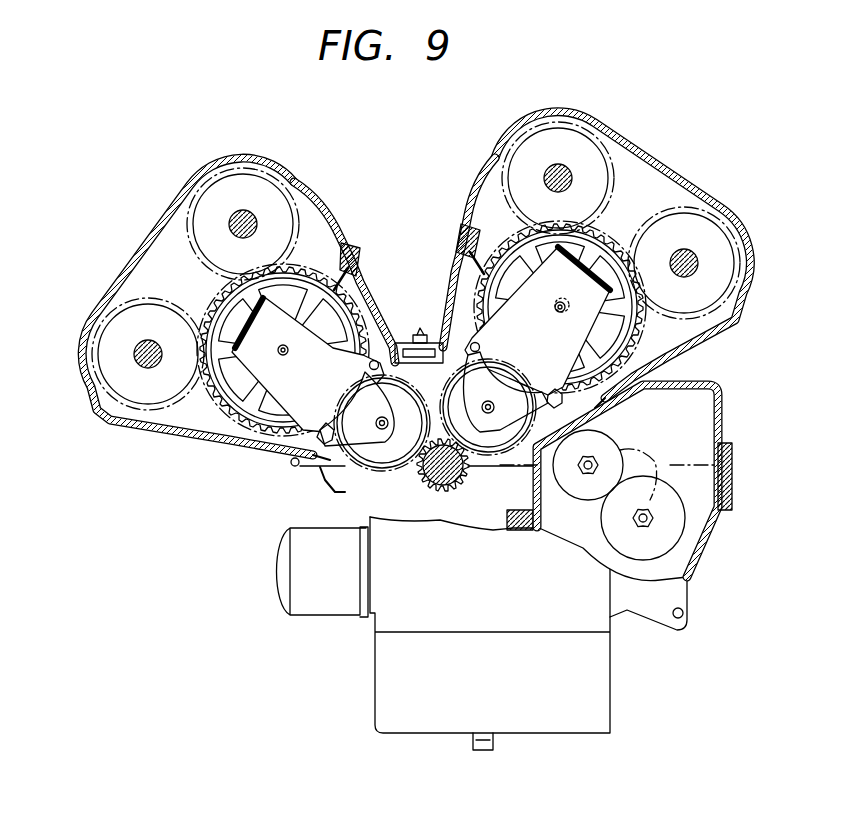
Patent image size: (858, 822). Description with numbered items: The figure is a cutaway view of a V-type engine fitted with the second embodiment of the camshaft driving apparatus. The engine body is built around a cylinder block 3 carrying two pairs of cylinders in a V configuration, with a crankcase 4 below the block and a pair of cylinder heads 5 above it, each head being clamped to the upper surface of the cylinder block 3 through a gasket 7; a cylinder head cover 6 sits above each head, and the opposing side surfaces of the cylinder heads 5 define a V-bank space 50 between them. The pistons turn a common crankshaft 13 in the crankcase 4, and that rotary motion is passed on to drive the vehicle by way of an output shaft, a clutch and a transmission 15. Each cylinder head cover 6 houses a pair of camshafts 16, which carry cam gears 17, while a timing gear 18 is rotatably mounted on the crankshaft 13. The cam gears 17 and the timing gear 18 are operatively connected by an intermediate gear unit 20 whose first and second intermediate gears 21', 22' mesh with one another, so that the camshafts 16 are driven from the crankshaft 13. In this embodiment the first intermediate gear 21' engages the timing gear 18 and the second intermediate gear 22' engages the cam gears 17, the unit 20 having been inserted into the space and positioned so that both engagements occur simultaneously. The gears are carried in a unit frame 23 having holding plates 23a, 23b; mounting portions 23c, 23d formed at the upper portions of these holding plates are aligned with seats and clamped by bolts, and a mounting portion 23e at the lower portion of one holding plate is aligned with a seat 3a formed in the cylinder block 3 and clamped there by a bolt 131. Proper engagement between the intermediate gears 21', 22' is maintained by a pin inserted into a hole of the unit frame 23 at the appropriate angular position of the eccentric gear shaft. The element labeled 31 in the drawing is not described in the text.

The cylinder block 3 is at (448, 302).
The seat 3a is at (287, 443).
The crankcase 4 is at (355, 505).
The cylinder head 5 is at (323, 204).
The cylinder head cover 6 is at (178, 196).
The gasket 7 is at (350, 284).
The crankshaft 13 is at (443, 477).
The transmission 15 is at (655, 462).
The camshaft 16 is at (238, 217).
The cam gear 17 is at (295, 183).
The timing gear 18 is at (420, 473).
The intermediate gear unit 20 is at (213, 300).
The first intermediate gear 21' is at (435, 437).
The second intermediate gear 22' is at (421, 315).
The unit frame 23 is at (280, 387).
The holding plate 23a is at (466, 256).
The holding plate 23b is at (350, 246).
The mounting portion 23c is at (576, 279).
The mounting portion 23d is at (250, 330).
The mounting portion 23e is at (298, 425).
The housing 31 is at (587, 420).
The V-bank space 50 is at (400, 251).
The bolt 131 is at (295, 466).